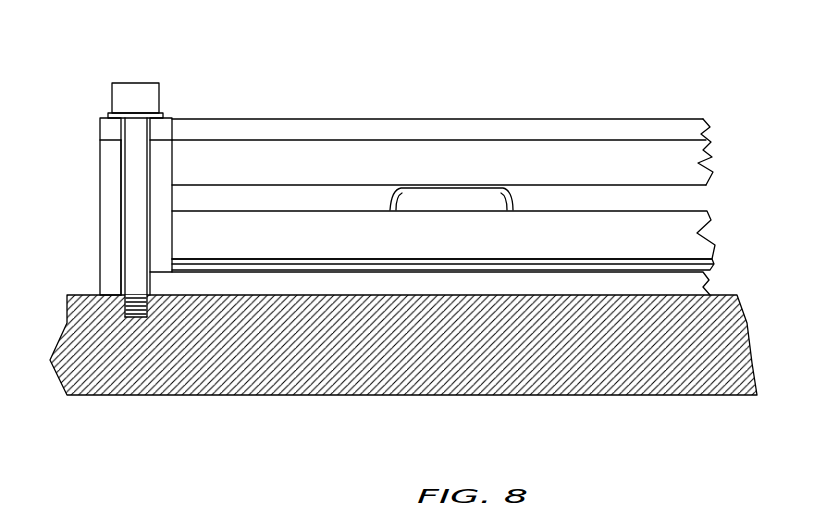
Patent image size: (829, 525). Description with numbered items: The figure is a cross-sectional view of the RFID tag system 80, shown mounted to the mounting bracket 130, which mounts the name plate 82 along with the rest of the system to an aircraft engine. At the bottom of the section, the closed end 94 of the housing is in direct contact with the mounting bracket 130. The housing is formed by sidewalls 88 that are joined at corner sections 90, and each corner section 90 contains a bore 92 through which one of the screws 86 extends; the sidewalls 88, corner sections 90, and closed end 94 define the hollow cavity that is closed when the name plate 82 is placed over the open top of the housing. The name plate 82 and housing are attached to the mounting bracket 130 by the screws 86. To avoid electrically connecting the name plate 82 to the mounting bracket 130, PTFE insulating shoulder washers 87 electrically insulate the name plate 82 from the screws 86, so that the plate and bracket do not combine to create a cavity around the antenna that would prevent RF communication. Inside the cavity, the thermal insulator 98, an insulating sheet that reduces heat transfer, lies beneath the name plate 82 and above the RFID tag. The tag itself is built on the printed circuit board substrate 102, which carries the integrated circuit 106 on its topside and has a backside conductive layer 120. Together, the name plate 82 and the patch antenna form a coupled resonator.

The RFID tag system 80 is at (588, 79).
The name plate 82 is at (467, 129).
The screws 86 is at (155, 90).
The PTFE insulating shoulder washers 87 is at (162, 118).
The sidewalls 88 is at (107, 168).
The corner sections 90 is at (167, 192).
The bore 92 is at (118, 245).
The closed end (bottom) 94 is at (706, 279).
The thermal insulator 98 is at (695, 163).
The printed circuit board substrate 102 is at (698, 234).
The integrated circuit 106 is at (513, 193).
The backside conductive layer 120 is at (706, 265).
The mounting bracket 130 is at (730, 333).